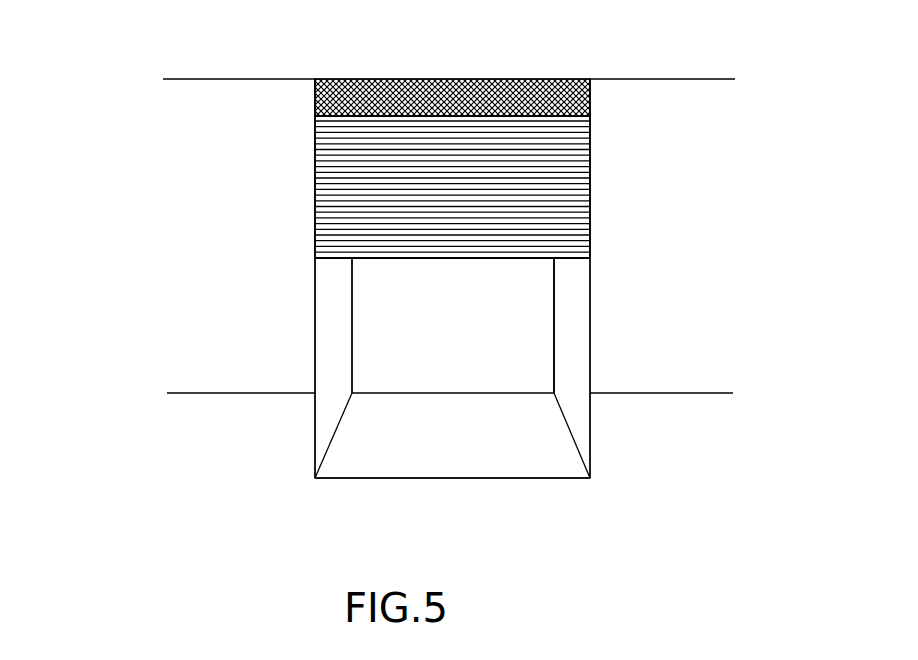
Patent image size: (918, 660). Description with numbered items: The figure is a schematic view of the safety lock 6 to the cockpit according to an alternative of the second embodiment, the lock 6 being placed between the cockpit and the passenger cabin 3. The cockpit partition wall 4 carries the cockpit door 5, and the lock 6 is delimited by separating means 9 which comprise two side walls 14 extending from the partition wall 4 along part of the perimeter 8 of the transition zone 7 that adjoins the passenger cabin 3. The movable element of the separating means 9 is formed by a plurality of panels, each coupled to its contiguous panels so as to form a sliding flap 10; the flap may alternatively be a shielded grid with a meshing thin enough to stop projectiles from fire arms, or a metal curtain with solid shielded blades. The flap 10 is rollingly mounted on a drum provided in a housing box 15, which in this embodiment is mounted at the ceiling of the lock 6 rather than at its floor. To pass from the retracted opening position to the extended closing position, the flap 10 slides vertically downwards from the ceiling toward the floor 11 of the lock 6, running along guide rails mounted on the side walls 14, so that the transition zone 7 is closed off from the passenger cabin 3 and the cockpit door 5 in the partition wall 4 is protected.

The passenger cabin 3 is at (130, 486).
The partition wall 4 is at (198, 100).
The cockpit door 5 is at (382, 293).
The upper portion 6 is at (230, 232).
The transition zone 7 is at (527, 302).
The perimeter 8 is at (514, 478).
The separating means 9 is at (642, 198).
The sliding flap 10 is at (578, 228).
The floor 11 is at (231, 474).
The side walls 14 is at (332, 342).
The housing box 15 is at (588, 90).